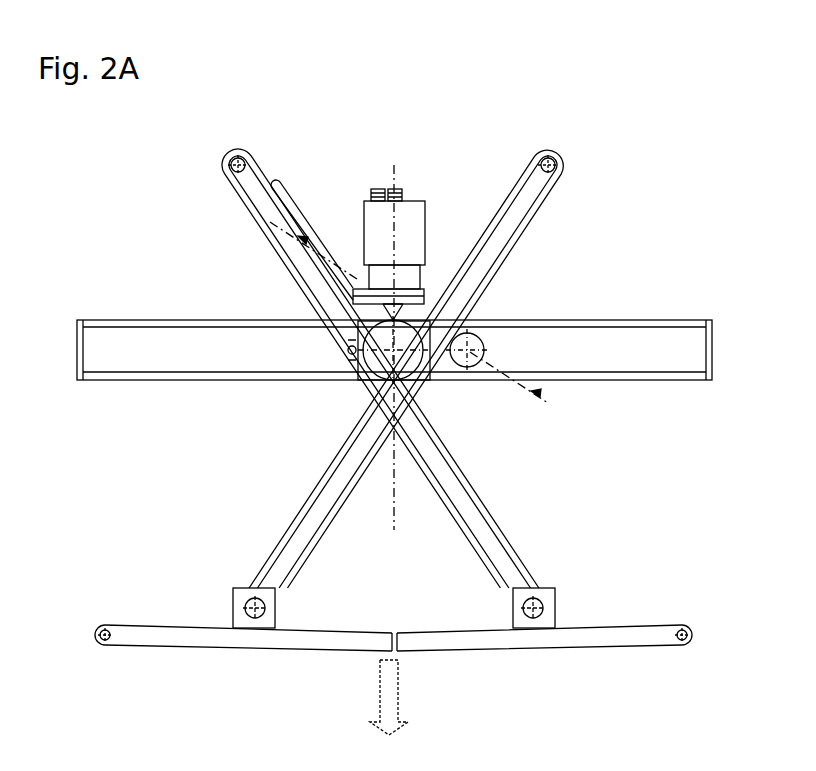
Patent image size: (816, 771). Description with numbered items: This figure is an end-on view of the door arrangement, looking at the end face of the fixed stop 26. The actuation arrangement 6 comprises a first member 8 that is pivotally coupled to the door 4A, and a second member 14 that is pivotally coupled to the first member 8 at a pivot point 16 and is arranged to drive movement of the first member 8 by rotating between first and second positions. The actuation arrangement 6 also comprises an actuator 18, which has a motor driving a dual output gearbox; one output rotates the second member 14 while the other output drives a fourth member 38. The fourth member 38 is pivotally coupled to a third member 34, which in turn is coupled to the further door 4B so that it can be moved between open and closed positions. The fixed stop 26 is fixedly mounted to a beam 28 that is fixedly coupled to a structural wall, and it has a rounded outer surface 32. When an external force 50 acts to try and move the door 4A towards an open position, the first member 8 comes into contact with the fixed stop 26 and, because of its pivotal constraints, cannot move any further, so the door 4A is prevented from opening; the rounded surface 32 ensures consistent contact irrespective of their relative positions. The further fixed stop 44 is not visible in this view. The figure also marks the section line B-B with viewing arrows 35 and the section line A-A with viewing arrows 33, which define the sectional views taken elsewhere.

The actuation arrangement 6 is at (352, 155).
The first member 8 is at (449, 353).
The second member 14 is at (445, 270).
The pivot point 16 is at (548, 150).
The actuator 18 is at (334, 211).
The fixed stop 26 is at (473, 360).
The beam 28 is at (636, 365).
The rounded outer surface 32 is at (445, 335).
The arrows 33 is at (368, 160).
The third member 34 is at (484, 520).
The arrows 35 is at (312, 228).
The fourth member 38 is at (310, 253).
The door 4A is at (285, 650).
The further door 4B is at (502, 652).
The further fixed stop 44 is at (393, 698).
The external force 50 is at (395, 705).